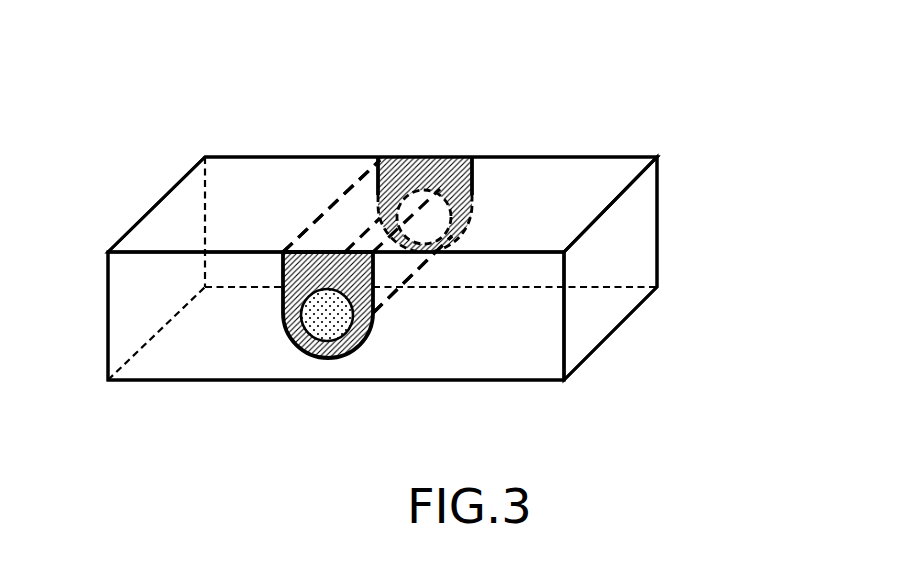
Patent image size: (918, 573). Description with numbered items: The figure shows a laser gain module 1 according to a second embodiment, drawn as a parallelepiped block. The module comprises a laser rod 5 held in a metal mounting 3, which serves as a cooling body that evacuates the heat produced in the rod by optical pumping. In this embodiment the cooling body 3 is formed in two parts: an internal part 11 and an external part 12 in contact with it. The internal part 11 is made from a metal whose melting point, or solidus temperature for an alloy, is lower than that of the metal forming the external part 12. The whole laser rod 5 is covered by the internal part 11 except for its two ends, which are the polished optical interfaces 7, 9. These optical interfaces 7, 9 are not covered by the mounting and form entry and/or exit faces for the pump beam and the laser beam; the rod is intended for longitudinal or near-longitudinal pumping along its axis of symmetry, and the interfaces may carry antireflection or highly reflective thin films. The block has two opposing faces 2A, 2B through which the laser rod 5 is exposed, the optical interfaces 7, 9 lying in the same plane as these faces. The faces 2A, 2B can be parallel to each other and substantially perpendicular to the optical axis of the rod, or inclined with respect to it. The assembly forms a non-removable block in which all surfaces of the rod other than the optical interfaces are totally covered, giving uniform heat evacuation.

The laser gain module 1 is at (233, 110).
The face of the cooling body 2A is at (135, 294).
The face of the cooling body 2B is at (268, 215).
The metal mounting 3 is at (598, 172).
The laser rod 5 is at (392, 277).
The optical interface 7 is at (325, 330).
The optical interface 9 is at (440, 208).
The internal part of the cooling body 11 is at (283, 313).
The external part of the cooling body 12 is at (638, 220).